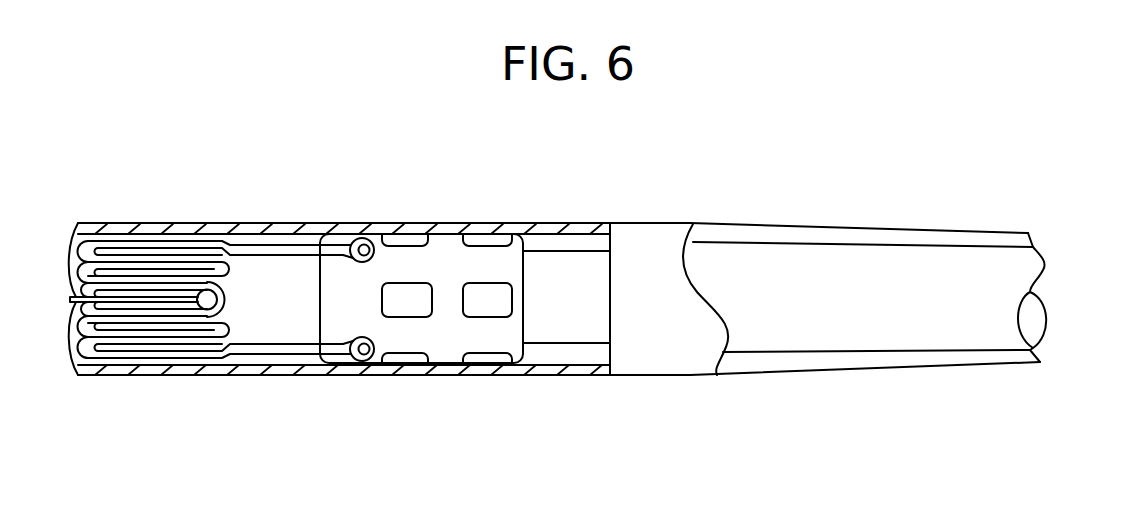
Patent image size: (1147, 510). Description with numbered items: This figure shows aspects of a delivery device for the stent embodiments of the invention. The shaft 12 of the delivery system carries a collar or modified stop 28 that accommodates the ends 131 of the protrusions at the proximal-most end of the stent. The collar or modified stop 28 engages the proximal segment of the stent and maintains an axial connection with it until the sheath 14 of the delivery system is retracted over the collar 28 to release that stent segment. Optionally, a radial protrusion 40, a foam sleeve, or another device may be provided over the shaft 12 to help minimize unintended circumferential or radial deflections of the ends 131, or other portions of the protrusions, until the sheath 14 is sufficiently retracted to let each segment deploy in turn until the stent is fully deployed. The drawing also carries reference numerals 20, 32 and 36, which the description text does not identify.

The shaft 12 is at (869, 258).
The sheath 14 is at (521, 223).
The heater carrier 20 is at (421, 318).
The collar or modified stop 28 is at (463, 316).
The lumen 32 is at (1045, 268).
The inner sleeve 36 is at (583, 353).
The radial protrusion 40 is at (943, 238).
The ends of protrusions 131 is at (363, 343).